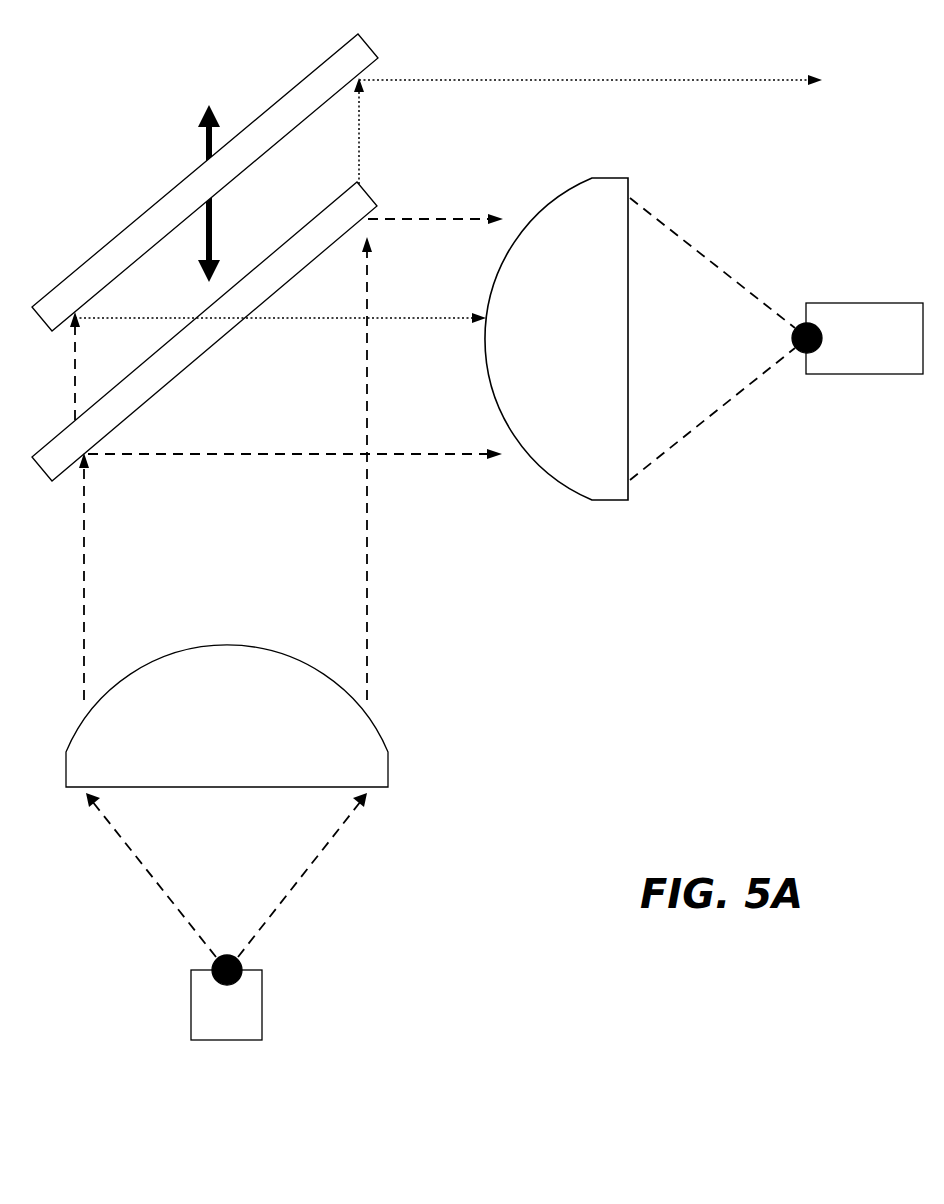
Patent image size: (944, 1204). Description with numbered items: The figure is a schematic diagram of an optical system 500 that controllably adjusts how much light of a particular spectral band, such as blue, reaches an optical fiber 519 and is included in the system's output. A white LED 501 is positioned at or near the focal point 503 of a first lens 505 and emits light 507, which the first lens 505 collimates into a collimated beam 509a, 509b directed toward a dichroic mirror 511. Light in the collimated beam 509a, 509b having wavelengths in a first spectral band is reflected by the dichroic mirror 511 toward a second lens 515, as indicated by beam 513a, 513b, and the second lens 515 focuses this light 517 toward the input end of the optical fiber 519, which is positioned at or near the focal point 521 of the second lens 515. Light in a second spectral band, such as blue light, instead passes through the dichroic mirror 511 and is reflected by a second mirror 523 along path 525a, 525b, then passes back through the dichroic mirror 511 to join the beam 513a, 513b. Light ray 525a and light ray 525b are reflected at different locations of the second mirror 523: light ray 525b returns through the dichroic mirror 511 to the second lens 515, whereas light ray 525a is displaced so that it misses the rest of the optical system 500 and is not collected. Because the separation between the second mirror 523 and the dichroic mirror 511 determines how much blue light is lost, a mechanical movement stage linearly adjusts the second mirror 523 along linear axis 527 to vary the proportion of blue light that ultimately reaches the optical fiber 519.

The optical system 500 is at (569, 684).
The white LED 501 is at (196, 1020).
The focal point 503 is at (213, 963).
The first lens 505 is at (72, 738).
The light 507 is at (326, 850).
The collimated beam 509a is at (82, 603).
The collimated beam 509b is at (364, 595).
The dichroic mirror 511 is at (63, 425).
The beam 513a is at (455, 212).
The beam 513b is at (458, 455).
The second lens 515 is at (547, 487).
The light 517 is at (698, 248).
The optical fiber 519 is at (868, 302).
The focal point 521 is at (800, 350).
The second mirror 523 is at (77, 255).
The light ray 525a is at (523, 85).
The light ray 525b is at (315, 320).
The linear axis 527 is at (205, 148).